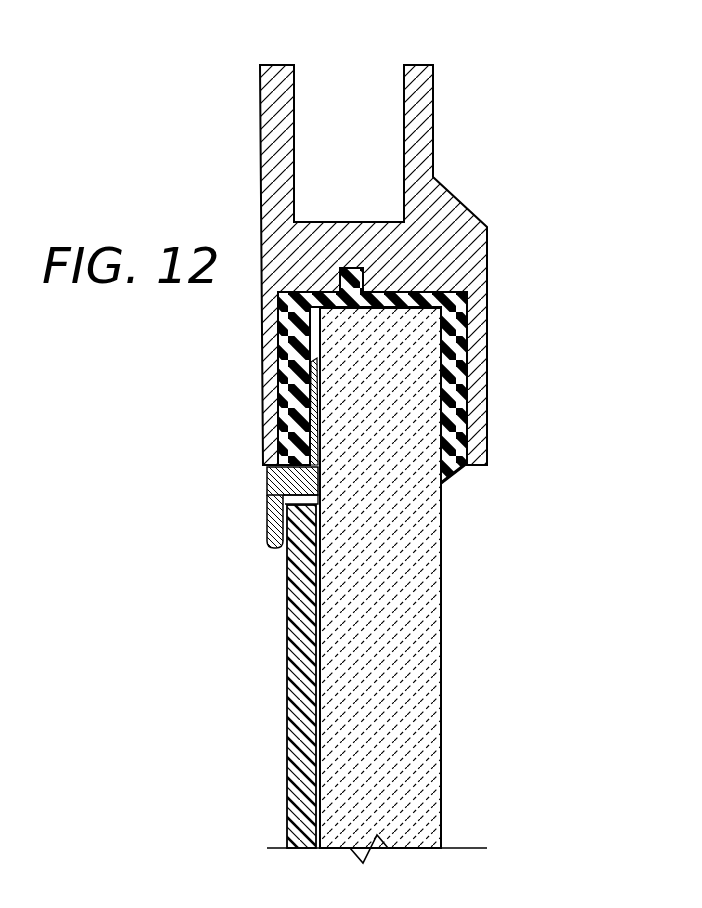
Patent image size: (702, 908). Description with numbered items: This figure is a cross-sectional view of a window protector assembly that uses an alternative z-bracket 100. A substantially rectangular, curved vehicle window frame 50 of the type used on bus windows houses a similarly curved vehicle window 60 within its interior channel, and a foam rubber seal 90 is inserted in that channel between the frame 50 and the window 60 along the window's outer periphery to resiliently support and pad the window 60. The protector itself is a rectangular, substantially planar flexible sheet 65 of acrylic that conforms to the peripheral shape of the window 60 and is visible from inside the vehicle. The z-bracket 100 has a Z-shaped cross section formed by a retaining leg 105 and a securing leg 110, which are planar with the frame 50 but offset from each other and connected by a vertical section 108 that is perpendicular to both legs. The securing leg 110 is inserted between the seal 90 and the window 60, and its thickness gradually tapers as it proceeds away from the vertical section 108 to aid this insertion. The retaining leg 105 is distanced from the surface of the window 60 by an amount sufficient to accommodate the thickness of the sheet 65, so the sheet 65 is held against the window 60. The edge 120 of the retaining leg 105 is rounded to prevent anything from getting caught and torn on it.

The vehicle window frame 50 is at (468, 204).
The vehicle window 60 is at (442, 612).
The flexible sheet 65 is at (288, 693).
The foam rubber seal 90 is at (455, 478).
The z-bracket 100 is at (245, 475).
The retaining leg 105 is at (268, 512).
The vertical section 108 is at (275, 457).
The securing leg 110 is at (313, 378).
The edge 120 is at (280, 550).